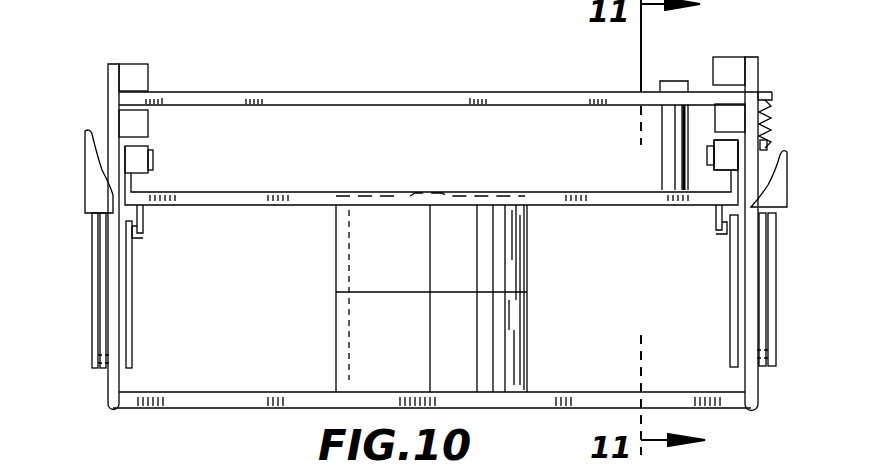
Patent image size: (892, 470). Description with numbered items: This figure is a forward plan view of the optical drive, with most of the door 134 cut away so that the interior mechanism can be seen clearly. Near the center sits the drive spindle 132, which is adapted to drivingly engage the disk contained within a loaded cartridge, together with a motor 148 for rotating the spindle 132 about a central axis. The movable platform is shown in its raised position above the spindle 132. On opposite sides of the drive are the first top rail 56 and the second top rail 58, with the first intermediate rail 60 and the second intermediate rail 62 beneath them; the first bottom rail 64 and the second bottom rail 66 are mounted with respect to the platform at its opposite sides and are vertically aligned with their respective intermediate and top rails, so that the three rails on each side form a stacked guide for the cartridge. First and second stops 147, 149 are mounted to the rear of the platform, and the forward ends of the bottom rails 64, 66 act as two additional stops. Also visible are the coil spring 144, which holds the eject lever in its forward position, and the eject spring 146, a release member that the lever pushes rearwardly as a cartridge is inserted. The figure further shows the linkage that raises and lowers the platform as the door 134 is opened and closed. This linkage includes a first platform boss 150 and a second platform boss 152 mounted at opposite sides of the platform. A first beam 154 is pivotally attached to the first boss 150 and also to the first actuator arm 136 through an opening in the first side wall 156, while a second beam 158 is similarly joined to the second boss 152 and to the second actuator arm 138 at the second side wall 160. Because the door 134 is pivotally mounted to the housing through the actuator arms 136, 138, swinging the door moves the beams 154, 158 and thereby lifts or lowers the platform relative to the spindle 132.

The first top rail 56 is at (132, 72).
The second top rail 58 is at (730, 70).
The first intermediate rail 60 is at (132, 122).
The second intermediate rail 62 is at (732, 118).
The first bottom rail 64 is at (138, 160).
The second bottom rail 66 is at (725, 152).
The drive spindle 132 is at (508, 258).
The door 134 is at (775, 190).
The first actuator arm 136 is at (92, 276).
The second actuator arm 138 is at (775, 290).
The coil spring 144 is at (770, 122).
The eject spring 146 is at (675, 80).
The first stop 147 is at (153, 160).
The motor 148 is at (503, 345).
The second stop 149 is at (722, 150).
The first platform boss 150 is at (146, 222).
The second platform boss 152 is at (716, 222).
The first beam 154 is at (135, 285).
The first side wall 156 is at (112, 330).
The second beam 158 is at (730, 283).
The second side wall 160 is at (755, 335).